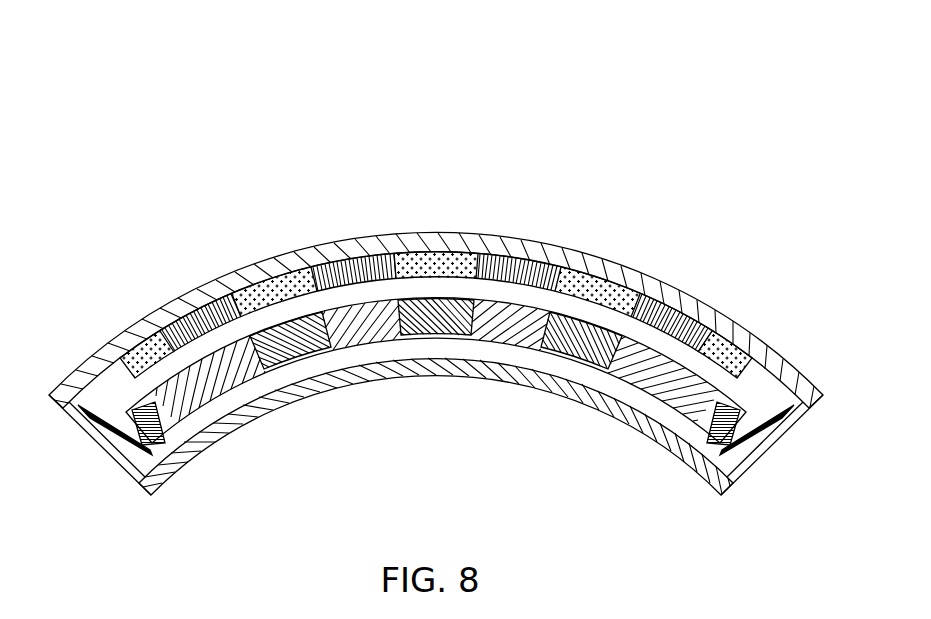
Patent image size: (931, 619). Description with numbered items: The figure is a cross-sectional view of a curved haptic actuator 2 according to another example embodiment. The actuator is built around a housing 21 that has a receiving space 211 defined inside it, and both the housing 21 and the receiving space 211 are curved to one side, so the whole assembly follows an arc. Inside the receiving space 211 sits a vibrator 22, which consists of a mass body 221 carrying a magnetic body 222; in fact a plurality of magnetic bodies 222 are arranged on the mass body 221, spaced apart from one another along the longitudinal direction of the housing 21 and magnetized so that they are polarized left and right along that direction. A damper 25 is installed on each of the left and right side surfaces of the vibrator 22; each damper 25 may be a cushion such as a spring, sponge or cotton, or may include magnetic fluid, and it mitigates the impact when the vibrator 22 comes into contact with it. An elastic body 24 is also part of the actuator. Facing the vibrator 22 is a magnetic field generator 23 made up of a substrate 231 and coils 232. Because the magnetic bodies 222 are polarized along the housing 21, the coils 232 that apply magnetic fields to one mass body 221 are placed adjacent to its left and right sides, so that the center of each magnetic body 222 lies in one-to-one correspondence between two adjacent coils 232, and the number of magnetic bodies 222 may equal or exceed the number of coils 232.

The curved haptic actuator 2 is at (429, 33).
The housing 21 is at (618, 276).
The receiving space 211 is at (620, 401).
The vibrator 22 is at (436, 402).
The mass body 221 is at (243, 383).
The magnetic body 222 is at (542, 342).
The magnetic field generator 23 is at (436, 238).
The substrate 231 is at (307, 272).
The coil 232 is at (478, 254).
The elastic body 24 is at (740, 450).
The damper 25 is at (173, 448).